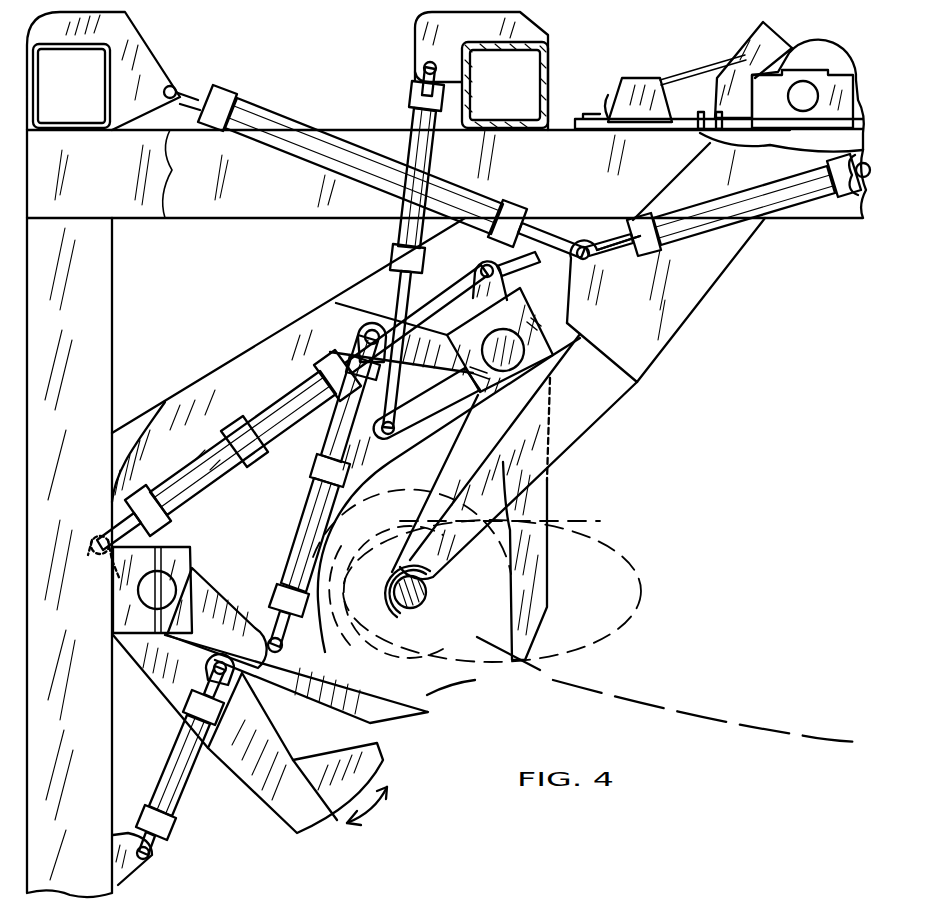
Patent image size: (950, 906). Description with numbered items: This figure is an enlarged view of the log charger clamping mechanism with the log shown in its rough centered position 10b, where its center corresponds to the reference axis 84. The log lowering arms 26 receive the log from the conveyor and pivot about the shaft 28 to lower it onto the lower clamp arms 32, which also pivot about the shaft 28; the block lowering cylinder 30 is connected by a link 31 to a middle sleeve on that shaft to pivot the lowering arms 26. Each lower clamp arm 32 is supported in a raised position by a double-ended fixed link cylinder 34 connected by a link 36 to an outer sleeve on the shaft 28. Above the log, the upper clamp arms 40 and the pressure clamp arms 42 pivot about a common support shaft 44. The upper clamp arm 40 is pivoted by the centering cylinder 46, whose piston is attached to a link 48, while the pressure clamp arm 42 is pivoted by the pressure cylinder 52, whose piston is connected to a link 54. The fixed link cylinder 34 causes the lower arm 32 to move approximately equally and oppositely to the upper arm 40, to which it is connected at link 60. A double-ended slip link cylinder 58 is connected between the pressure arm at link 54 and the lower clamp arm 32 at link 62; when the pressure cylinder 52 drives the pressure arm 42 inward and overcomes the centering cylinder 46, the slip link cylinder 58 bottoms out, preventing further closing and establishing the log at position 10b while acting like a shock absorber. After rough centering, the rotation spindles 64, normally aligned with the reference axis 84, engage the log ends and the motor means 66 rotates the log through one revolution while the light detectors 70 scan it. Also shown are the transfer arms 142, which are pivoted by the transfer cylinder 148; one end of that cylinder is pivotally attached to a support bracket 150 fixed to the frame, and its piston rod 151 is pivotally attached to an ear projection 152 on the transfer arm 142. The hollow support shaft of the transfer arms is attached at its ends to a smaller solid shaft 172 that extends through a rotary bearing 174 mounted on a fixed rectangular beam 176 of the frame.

The rough centered position 10b is at (463, 685).
The log lowering arms 26 is at (293, 823).
The shaft 28 is at (165, 584).
The block lowering cylinder 30 is at (190, 793).
The link 31 is at (207, 660).
The lower clamp arms 32 is at (397, 713).
The fixed link cylinder 34 is at (293, 573).
The link 36 is at (233, 607).
The upper clamp arms 40 is at (540, 512).
The pressure clamp arms 42 is at (378, 467).
The common support shaft 44 is at (520, 355).
The centering cylinder 46 is at (400, 235).
The link 48 is at (430, 407).
The pressure cylinder 52 is at (717, 222).
The link 54 is at (477, 282).
The slip link cylinder 58 is at (263, 423).
The link 60 is at (380, 328).
The link 62 is at (90, 547).
The rotation spindles 64 is at (410, 613).
The motor means 66 is at (653, 557).
The light detectors 70 is at (800, 886).
The reference axis 84 is at (430, 593).
The transfer arms 142 is at (575, 425).
The transfer cylinder 148 is at (300, 128).
The support bracket 150 is at (160, 60).
The piston rod 151 is at (547, 240).
The ear projection 152 is at (594, 240).
The solid shaft 172 is at (806, 96).
The rotary bearing 174 is at (770, 90).
The fixed rectangular beam 176 is at (825, 220).